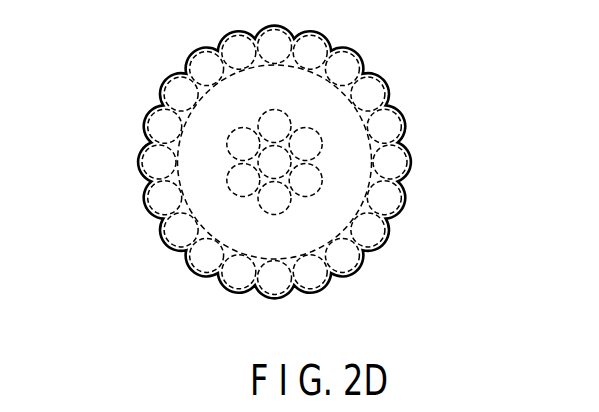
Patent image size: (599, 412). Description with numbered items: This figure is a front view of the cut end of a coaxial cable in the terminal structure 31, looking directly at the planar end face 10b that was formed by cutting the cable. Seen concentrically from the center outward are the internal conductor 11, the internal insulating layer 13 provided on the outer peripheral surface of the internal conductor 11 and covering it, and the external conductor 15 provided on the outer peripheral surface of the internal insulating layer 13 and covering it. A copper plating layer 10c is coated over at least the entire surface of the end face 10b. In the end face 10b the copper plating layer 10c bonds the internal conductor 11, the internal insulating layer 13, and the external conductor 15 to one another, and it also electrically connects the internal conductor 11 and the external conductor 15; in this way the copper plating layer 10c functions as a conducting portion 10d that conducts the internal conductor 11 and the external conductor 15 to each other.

The terminal structure 31 is at (400, 80).
The end face 10b is at (172, 276).
The copper plating layer 10c is at (259, 162).
The conducting portion 10d is at (259, 162).
The internal conductor 11 is at (305, 177).
The internal insulating layer 13 is at (350, 202).
The external conductor 15 is at (367, 263).